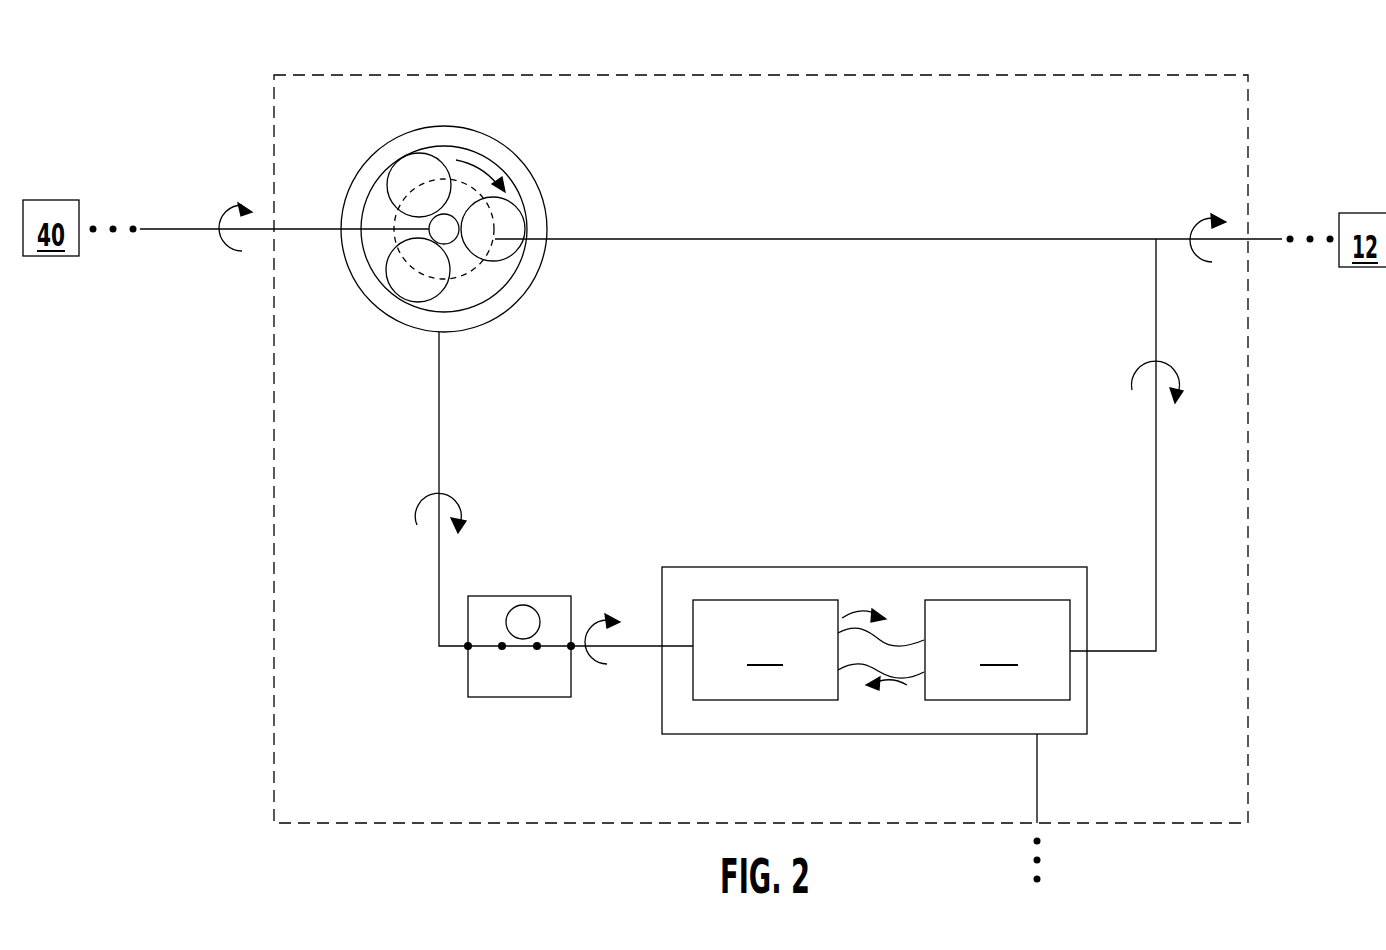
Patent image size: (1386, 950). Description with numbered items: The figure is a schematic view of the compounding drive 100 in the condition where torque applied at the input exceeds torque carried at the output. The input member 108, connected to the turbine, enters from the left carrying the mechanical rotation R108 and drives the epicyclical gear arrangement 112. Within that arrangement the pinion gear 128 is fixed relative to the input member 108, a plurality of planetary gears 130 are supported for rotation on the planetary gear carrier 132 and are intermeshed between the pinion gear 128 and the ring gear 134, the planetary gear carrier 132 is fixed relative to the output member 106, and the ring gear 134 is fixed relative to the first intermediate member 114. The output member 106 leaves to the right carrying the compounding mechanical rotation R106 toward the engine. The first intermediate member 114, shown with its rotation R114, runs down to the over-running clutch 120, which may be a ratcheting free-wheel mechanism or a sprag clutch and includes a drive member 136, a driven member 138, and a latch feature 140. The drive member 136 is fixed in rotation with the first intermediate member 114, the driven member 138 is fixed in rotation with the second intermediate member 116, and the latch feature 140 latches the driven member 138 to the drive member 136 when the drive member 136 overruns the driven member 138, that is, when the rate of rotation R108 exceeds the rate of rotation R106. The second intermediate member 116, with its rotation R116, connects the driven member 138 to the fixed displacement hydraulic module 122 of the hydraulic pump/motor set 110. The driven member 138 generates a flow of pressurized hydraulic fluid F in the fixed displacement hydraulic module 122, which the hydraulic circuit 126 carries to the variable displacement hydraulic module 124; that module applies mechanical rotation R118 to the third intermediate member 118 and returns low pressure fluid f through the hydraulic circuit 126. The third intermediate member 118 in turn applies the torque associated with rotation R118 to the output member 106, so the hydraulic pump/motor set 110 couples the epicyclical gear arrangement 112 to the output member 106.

The compounding drive 100 is at (432, 823).
The output member 106 is at (1260, 239).
The input member 108 is at (168, 230).
The hydraulic pump/motor set 110 is at (874, 696).
The epicyclical gear arrangement 112 is at (491, 238).
The first intermediate member 114 is at (440, 452).
The second intermediate member 116 is at (633, 648).
The third intermediate member 118 is at (1156, 428).
The over-running clutch 120 is at (496, 636).
The fixed displacement hydraulic module 122 is at (765, 650).
The variable displacement hydraulic module 124 is at (997, 650).
The hydraulic circuit 126 is at (902, 677).
The pinion gear 128 is at (444, 233).
The planetary gears 130 is at (428, 173).
The planetary gear carrier 132 is at (427, 273).
The ring gear 134 is at (540, 210).
The drive member 136 is at (482, 648).
The driven member 138 is at (550, 645).
The latch feature 140 is at (510, 648).
The mechanical rotation of input member R108 is at (240, 251).
The mechanical rotation of output member R106 is at (1212, 218).
The rotation direction of first shaft R114 is at (437, 500).
The rotation direction of second shaft R116 is at (592, 616).
The mechanical rotation of third intermediate member R118 is at (1155, 362).
The pressurized hydraulic fluid F is at (853, 612).
The low pressure fluid f is at (887, 693).